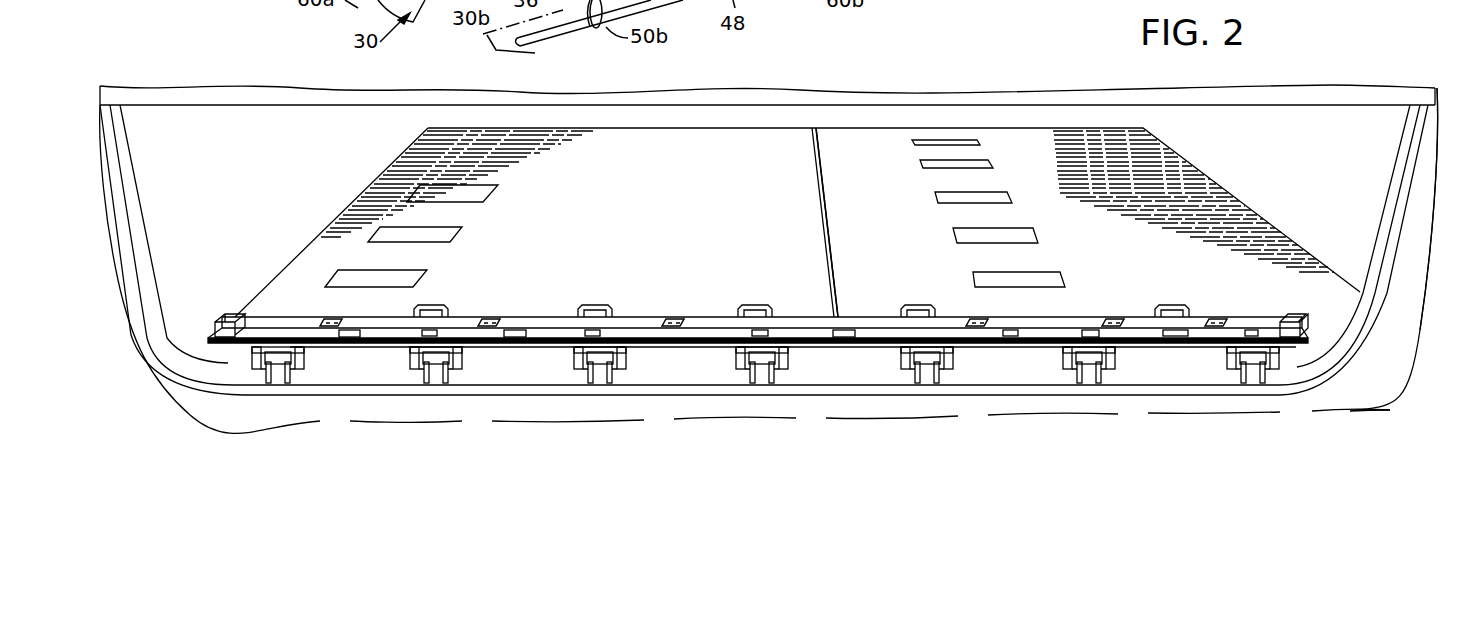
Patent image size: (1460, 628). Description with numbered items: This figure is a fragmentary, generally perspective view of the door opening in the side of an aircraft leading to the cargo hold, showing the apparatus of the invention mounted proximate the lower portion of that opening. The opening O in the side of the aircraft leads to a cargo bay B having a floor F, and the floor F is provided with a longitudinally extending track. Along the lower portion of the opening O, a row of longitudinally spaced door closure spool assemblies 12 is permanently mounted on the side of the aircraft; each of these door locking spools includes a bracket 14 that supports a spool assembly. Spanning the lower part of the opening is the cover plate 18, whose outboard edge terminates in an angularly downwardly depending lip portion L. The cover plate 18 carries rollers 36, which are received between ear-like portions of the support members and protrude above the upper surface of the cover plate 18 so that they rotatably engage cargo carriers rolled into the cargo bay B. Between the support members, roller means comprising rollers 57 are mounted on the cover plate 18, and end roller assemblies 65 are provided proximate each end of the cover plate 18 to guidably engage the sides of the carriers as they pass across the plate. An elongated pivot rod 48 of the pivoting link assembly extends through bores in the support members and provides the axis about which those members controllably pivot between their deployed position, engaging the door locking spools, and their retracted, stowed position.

The door closure spool assembly 12 is at (296, 384).
The bracket 14 is at (558, 381).
The cover plate 18 is at (805, 330).
The roller 36 is at (440, 323).
The pivot rod 48 is at (345, 350).
The roller 57 is at (350, 329).
The end roller assembly 65 is at (241, 318).
The cargo bay B is at (1189, 120).
The opening O is at (1408, 122).
The floor F is at (1225, 212).
The lip portion L is at (1298, 368).